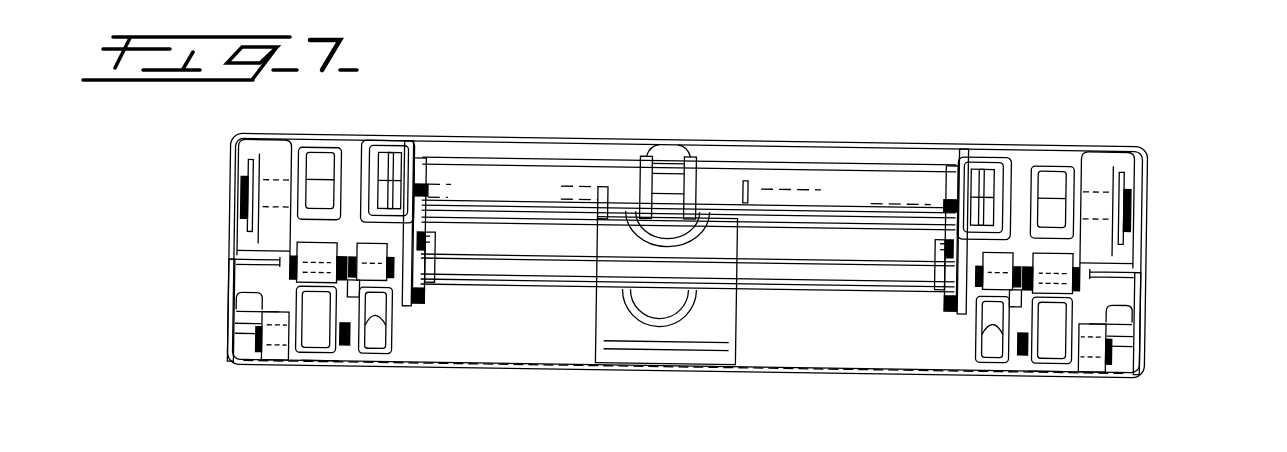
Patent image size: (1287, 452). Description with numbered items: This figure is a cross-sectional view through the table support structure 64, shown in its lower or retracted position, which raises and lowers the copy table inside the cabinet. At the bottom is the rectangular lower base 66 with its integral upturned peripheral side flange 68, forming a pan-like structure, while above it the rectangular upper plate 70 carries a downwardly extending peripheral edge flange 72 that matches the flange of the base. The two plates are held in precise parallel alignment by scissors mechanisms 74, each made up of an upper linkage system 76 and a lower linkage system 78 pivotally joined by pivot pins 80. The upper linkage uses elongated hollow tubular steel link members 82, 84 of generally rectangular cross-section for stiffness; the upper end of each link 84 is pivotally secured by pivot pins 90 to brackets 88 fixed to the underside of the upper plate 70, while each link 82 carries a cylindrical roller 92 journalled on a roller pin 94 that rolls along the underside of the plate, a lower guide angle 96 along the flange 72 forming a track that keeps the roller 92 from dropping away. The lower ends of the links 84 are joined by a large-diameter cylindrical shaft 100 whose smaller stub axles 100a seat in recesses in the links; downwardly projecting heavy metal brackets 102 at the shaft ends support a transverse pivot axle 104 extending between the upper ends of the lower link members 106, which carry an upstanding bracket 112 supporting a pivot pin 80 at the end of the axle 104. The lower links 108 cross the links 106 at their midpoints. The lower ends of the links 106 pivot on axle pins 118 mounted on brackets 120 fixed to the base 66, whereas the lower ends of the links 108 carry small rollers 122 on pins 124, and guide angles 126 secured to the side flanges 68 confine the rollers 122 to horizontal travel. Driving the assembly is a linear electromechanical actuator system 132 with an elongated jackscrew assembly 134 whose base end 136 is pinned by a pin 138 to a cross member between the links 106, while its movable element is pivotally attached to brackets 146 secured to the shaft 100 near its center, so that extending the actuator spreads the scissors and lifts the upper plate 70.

The table support structure 64 is at (860, 439).
The lower base 66 is at (476, 374).
The upturned peripheral side flange 68 is at (223, 340).
The upper plate 70 is at (834, 140).
The peripheral edge flange 72 is at (230, 202).
The scissors mechanism 74 is at (282, 278).
The upper linkage system 76 is at (380, 102).
The lower linkage system 78 is at (345, 372).
The pivot pins 80 is at (228, 273).
The link member 82 is at (322, 153).
The link member 84 is at (412, 150).
The brackets 88 is at (366, 148).
The pivot pins 90 is at (398, 154).
The cylindrical roller 92 is at (267, 140).
The roller pin 94 is at (287, 150).
The lower guide angle 96 is at (240, 259).
The cylindrical shaft 100 is at (605, 162).
The stub axles 100a is at (427, 226).
The brackets 102 is at (430, 313).
The transverse pivot axle 104 is at (535, 288).
The lower link members 106 is at (380, 358).
The lower links 108 is at (320, 358).
The upstanding bracket 112 is at (435, 260).
The axle pins 118 is at (398, 344).
The brackets 120 is at (403, 320).
The rollers 122 is at (283, 360).
The pins 124 is at (225, 358).
The guide angles 126 is at (232, 309).
The linear electromechanical actuator system 132 is at (703, 213).
The jackscrew assembly 134 is at (745, 243).
The base end 136 is at (712, 300).
The pin 138 is at (760, 192).
The brackets 146 is at (657, 145).